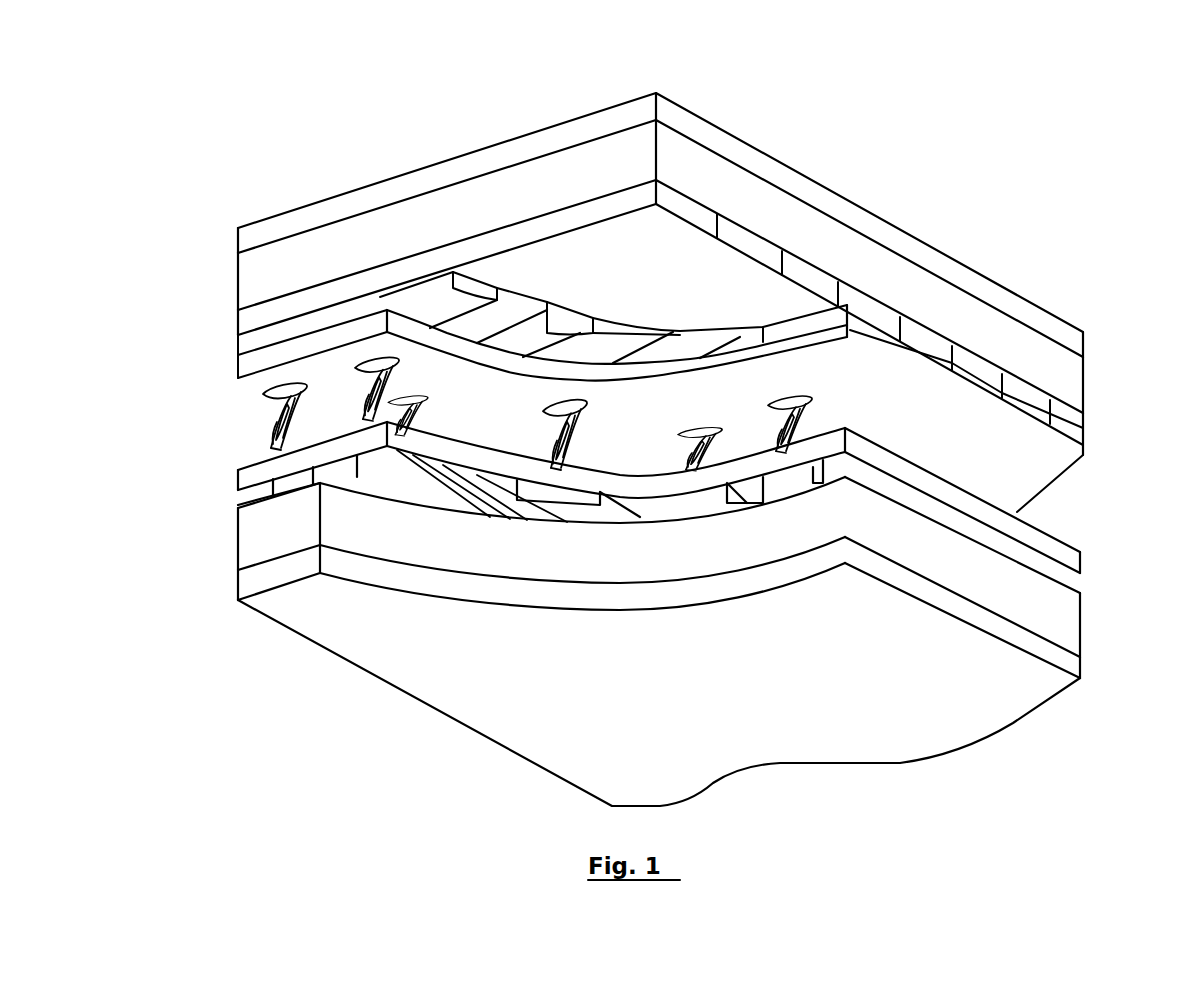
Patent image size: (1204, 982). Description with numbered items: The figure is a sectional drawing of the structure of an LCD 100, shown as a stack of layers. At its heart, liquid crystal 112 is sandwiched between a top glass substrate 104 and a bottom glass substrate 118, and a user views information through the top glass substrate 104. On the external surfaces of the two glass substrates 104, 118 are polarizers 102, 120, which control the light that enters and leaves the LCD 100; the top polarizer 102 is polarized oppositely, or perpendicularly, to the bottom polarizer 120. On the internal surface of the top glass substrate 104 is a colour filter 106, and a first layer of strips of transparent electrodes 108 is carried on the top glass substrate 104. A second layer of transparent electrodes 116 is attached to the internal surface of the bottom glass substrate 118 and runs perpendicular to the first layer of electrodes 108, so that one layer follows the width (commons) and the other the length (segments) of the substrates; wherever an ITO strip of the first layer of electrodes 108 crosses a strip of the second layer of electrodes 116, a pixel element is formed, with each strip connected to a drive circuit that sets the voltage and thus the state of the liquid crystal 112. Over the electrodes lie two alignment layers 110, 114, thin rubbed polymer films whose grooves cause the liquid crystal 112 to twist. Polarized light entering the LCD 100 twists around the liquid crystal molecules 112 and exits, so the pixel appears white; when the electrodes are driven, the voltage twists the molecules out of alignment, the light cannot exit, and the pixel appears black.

The LCD 100 is at (156, 94).
The top polarizer 102 is at (718, 132).
The top glass substrate 104 is at (1083, 375).
The colour filter 106 is at (1083, 425).
The first layer of transparent electrodes 108 is at (238, 347).
The top alignment layer 110 is at (1083, 455).
The liquid crystal 112 is at (272, 418).
The bottom alignment layer 114 is at (1083, 548).
The second layer of transparent electrodes 116 is at (275, 497).
The bottom glass substrate 118 is at (1083, 625).
The bottom polarizer 120 is at (1083, 668).